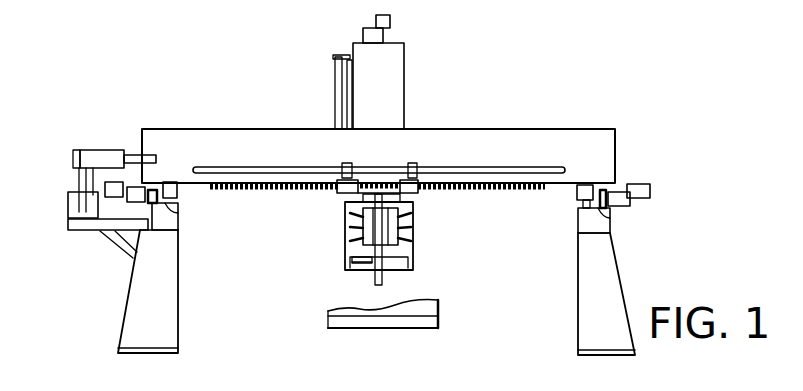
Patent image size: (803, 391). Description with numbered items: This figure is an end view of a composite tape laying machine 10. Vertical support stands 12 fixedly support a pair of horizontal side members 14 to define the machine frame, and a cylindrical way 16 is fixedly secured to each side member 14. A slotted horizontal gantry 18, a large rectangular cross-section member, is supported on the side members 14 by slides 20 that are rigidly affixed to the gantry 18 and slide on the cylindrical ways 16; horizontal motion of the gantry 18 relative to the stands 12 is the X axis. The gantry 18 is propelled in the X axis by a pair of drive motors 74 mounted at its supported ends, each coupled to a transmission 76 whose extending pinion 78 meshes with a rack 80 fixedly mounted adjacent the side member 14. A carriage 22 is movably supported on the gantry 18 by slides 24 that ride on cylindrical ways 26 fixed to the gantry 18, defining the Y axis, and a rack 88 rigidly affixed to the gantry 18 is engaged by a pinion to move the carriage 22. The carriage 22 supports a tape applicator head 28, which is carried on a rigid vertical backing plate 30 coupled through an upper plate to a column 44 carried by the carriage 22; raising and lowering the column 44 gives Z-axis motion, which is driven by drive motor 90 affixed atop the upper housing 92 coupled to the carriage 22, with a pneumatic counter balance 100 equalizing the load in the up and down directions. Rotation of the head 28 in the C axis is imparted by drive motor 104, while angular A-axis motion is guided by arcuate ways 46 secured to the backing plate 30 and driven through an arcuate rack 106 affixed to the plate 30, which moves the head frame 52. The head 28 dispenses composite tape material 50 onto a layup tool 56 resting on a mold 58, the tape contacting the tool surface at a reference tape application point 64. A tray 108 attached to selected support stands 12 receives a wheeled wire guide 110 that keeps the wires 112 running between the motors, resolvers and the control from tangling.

The tape laying machine 10 is at (648, 69).
The vertical support stands 12 is at (132, 328).
The horizontal side members 14 is at (163, 224).
The cylindrical way 16 is at (179, 182).
The gantry 18 is at (550, 138).
The slides 20 is at (176, 188).
The carriage 22 is at (334, 196).
The slides 24 is at (428, 128).
The cylindrical ways 26 is at (482, 166).
The tape applicator head 28 is at (330, 248).
The backing plate 30 is at (420, 250).
The column 44 is at (378, 184).
The arcuate ways 46 is at (400, 246).
The composite tape material 50 is at (345, 262).
The frame 52 is at (345, 212).
The layup tool 56 is at (440, 302).
The mold 58 is at (438, 328).
The tape application point 64 is at (377, 278).
The drive motors 74 is at (115, 150).
The transmission 76 is at (114, 182).
The pinion 78 is at (160, 182).
The racks 80 is at (178, 218).
The rack 88 is at (248, 192).
The drive motor 90 is at (376, 21).
The upper housing 92 is at (393, 78).
The pneumatic counter balance 100 is at (335, 92).
The drive motor 104 is at (388, 35).
The arcuate rack 106 is at (345, 258).
The tray 108 is at (77, 233).
The wheeled wire guide 110 is at (70, 190).
The wires 112 is at (78, 150).